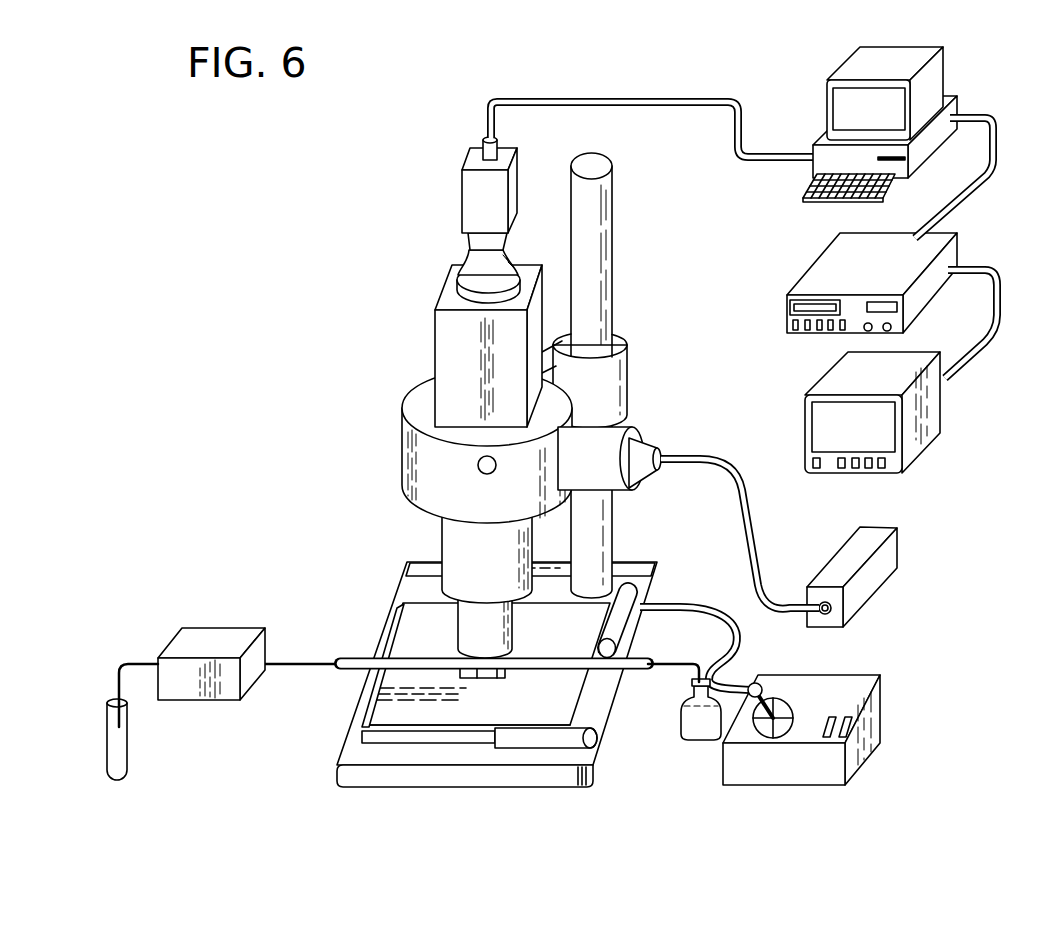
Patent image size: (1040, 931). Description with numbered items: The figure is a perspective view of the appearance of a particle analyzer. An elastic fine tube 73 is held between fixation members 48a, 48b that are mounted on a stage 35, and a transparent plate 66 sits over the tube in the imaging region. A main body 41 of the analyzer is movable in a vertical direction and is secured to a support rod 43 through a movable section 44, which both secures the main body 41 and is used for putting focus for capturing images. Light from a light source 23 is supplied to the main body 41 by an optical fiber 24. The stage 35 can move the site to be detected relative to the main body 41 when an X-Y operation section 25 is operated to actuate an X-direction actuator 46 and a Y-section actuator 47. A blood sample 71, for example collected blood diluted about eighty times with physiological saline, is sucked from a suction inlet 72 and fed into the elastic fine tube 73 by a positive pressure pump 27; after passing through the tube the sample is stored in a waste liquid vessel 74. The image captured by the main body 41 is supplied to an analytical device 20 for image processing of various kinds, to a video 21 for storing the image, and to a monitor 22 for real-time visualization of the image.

The analytical device 20 is at (938, 68).
The video 21 is at (953, 249).
The monitor 22 is at (933, 405).
The light source 23 is at (893, 549).
The optical fiber 24 is at (752, 505).
The X-Y operation section 25 is at (878, 704).
The positive pressure pump 27 is at (218, 635).
The stage 35 is at (397, 630).
The main body of the analyzer 41 is at (411, 329).
The support rod 43 is at (604, 208).
The movable section 44 is at (622, 338).
The X-direction actuator 46 is at (597, 741).
The Y-section actuator 47 is at (628, 596).
The fixation member 48a is at (582, 608).
The fixation member 48b is at (572, 693).
The transparent plate 66 is at (493, 668).
The blood sample 71 is at (117, 742).
The suction inlet 72 is at (127, 660).
The elastic fine tube 73 is at (347, 670).
The waste liquid vessel 74 is at (682, 713).